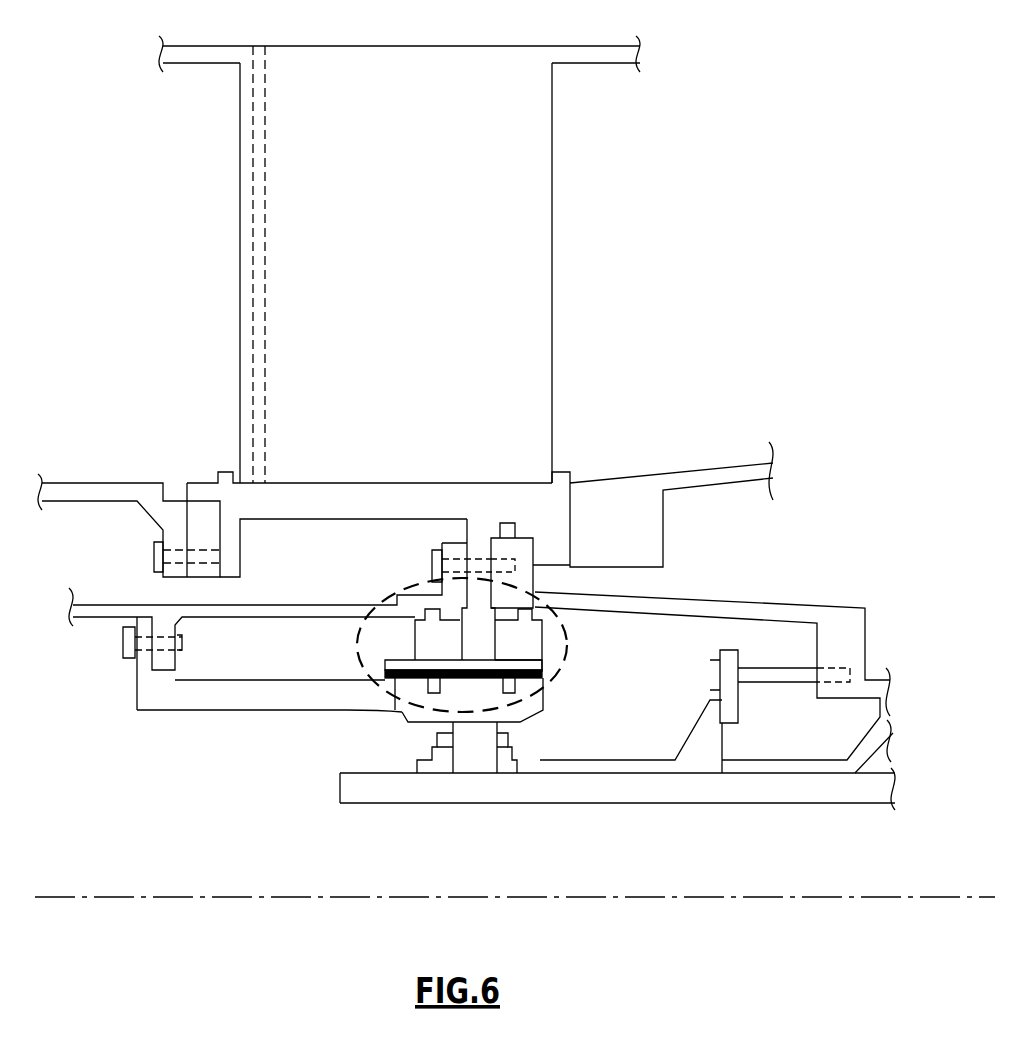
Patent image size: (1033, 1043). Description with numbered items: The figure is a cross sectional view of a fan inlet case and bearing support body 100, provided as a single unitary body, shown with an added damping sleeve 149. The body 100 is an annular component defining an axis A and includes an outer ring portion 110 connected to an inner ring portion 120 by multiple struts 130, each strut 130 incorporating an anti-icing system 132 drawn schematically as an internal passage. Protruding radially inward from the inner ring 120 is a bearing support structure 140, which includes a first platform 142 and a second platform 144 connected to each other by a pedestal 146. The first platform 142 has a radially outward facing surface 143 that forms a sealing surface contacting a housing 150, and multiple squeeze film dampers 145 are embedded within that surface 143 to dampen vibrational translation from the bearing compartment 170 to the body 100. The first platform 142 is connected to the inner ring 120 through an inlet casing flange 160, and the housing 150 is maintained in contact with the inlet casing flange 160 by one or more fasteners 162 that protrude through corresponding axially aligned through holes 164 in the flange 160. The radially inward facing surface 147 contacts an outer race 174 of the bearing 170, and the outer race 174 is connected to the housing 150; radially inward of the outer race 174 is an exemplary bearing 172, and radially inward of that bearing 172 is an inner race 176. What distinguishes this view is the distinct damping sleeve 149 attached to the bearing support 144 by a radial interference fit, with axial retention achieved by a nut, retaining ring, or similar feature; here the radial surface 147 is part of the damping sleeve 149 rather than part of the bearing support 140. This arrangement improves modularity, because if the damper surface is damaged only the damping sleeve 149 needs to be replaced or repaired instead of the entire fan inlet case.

The fan inlet case and bearing support body 100 is at (603, 308).
The outer ring portion 110 is at (598, 52).
The inner ring portion 120 is at (300, 492).
The strut 130 is at (552, 190).
The anti-icing system 132 is at (262, 78).
The bearing support structure 140 is at (360, 667).
The first platform 142 is at (512, 637).
The radially outward facing surface 143 is at (520, 600).
The second platform 144 is at (532, 657).
The squeeze film damper 145 is at (428, 628).
The pedestal 146 is at (478, 650).
The radially inward facing surface 147 is at (497, 716).
The damping sleeve 149 is at (397, 712).
The housing 150 is at (272, 606).
The inlet casing flange 160 is at (473, 535).
The fastener 162 is at (432, 565).
The through hole 164 is at (520, 530).
The bearing 170 is at (292, 764).
The exemplary bearing 172 is at (462, 748).
The outer race 174 is at (520, 722).
The inner race 176 is at (505, 767).
The axis A is at (805, 897).